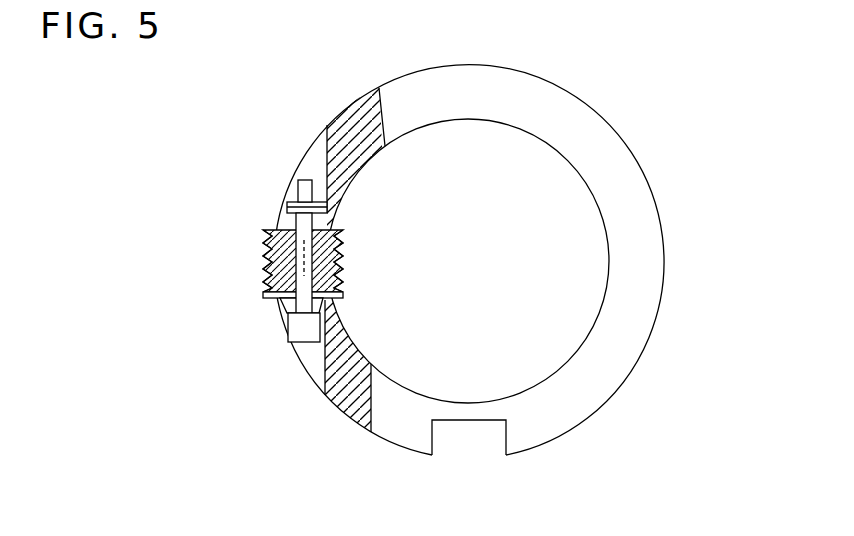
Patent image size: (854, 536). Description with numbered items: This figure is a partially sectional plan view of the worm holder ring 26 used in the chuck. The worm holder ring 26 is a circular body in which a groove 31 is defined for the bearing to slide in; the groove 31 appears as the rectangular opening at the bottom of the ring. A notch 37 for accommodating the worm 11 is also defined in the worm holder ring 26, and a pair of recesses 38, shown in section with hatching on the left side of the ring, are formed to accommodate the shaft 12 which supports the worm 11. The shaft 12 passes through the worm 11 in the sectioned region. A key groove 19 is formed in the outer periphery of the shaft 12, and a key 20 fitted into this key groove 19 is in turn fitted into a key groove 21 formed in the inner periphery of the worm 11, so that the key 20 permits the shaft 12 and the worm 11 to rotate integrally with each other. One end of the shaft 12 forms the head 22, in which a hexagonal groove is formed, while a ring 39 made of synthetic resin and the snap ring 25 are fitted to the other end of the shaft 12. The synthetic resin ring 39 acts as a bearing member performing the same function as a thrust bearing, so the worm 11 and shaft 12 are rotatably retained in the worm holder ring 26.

The worm holder ring 26 is at (608, 142).
The groove 31 is at (468, 422).
The recesses 38 is at (306, 160).
The shaft 12 is at (292, 258).
The worm 11 is at (262, 279).
The key 20 is at (263, 253).
The key groove 19 is at (345, 285).
The notch 37 is at (262, 293).
The synthetic resin ring 39 is at (325, 205).
The key groove 21 is at (287, 213).
The snap ring 25 is at (287, 202).
The head 22 is at (289, 340).